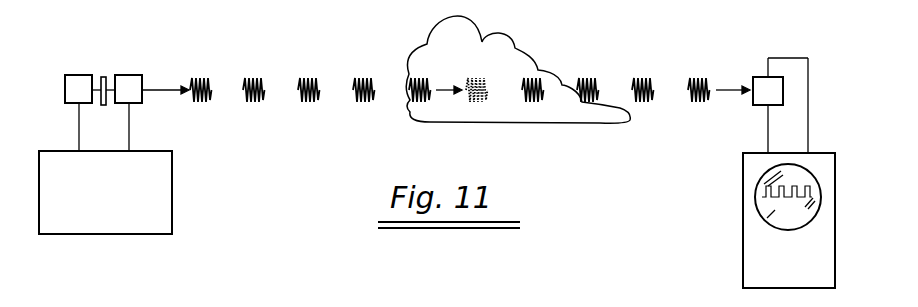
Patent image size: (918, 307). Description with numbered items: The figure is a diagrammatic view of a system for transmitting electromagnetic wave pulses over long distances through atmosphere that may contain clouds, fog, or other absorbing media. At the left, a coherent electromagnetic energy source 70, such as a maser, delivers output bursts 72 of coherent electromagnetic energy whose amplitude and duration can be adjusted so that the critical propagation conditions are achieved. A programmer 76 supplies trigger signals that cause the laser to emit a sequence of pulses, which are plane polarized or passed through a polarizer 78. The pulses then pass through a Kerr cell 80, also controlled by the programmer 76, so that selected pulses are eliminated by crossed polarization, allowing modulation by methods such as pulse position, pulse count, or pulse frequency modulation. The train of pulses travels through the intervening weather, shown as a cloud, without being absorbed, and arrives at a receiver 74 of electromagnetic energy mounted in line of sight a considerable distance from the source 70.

The coherent electromagnetic energy source 70 is at (70, 76).
The polarizer 78 is at (104, 77).
The Kerr cell 80 is at (133, 76).
The output bursts 72 is at (203, 74).
The programmer 76 is at (165, 183).
The receiver 74 is at (758, 66).